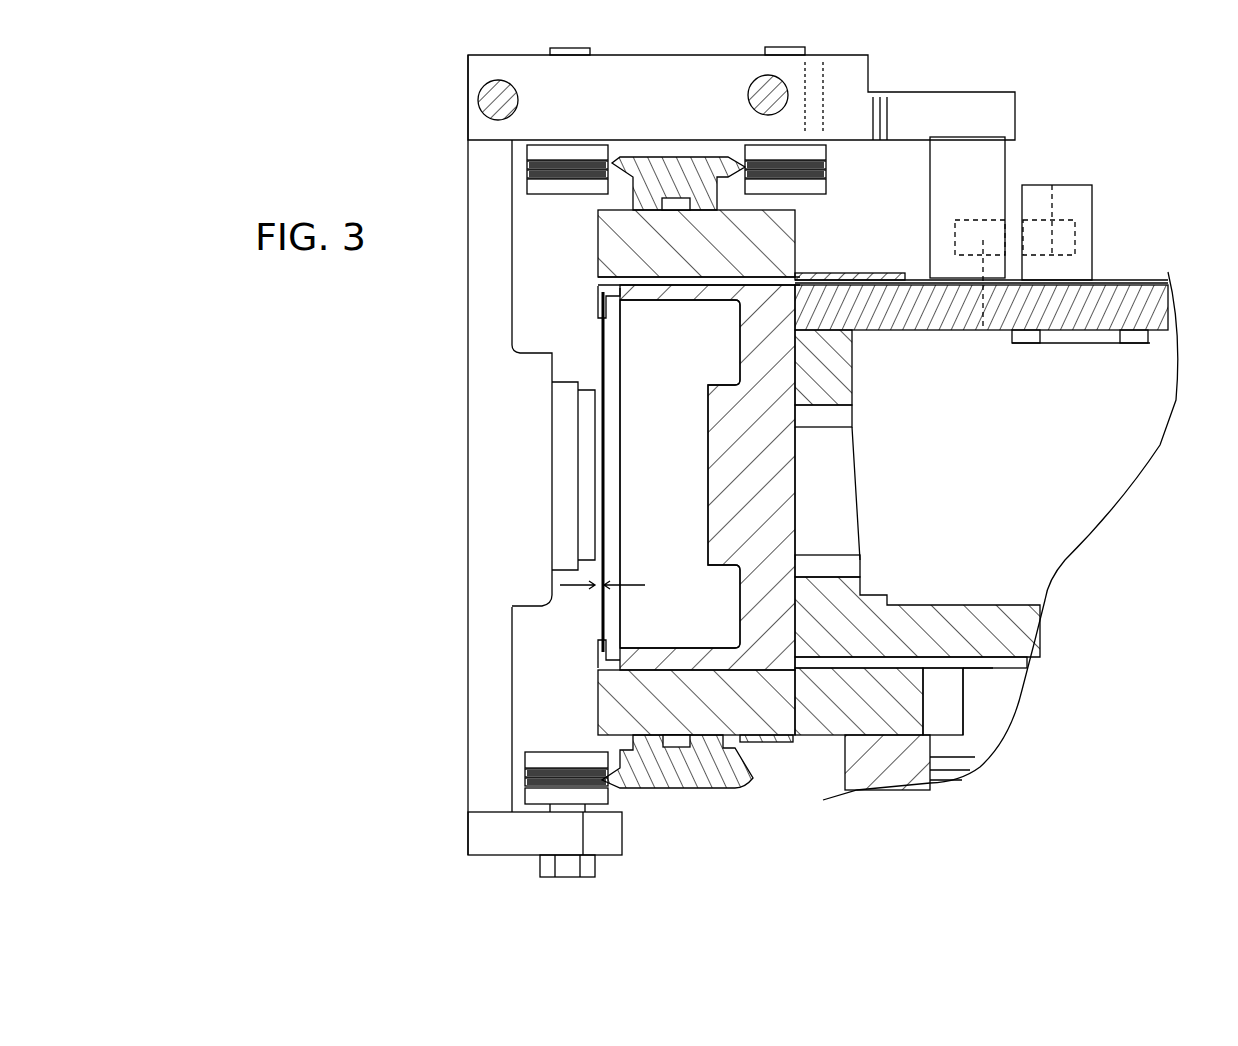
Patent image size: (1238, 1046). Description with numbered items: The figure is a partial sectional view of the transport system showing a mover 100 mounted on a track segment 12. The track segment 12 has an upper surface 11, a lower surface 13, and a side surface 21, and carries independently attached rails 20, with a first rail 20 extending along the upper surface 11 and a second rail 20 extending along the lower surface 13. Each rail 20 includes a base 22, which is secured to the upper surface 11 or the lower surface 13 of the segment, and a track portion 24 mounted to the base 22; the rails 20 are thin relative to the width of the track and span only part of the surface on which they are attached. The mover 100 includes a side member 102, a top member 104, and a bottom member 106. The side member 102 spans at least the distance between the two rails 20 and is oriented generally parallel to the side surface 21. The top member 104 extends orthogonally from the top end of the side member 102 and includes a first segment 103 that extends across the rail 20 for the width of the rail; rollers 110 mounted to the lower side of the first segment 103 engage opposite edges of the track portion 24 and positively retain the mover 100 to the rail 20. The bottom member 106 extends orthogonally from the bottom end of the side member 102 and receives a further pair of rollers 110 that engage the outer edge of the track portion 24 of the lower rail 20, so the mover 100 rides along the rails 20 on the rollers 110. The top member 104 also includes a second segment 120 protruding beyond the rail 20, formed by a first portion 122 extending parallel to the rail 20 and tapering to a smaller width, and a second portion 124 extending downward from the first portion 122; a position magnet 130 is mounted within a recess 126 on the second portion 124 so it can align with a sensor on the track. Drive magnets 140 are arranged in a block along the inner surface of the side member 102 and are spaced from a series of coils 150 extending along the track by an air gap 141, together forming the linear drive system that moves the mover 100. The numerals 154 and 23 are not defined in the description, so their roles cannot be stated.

The mover 100 is at (468, 97).
The side member 102 is at (482, 312).
The first segment 103 is at (716, 108).
The top member 104 is at (620, 72).
The bottom member 106 is at (605, 845).
The rollers 110 is at (568, 152).
The second segment 120 is at (978, 90).
The first portion 122 is at (910, 115).
The second portion 124 is at (978, 155).
The recess 126 is at (955, 240).
The position magnet 130 is at (985, 345).
The drive magnets 140 is at (587, 467).
The air gap 141 is at (630, 585).
The coils 150 is at (610, 438).
The mounting hole 154 is at (1052, 200).
The upper surface 11 is at (840, 277).
The straight track segment 12 is at (768, 476).
The lower surface 13 is at (995, 672).
The rail 20 is at (766, 255).
The side surface 21 is at (597, 298).
The base 22 is at (700, 258).
The cavity 23 is at (740, 340).
The track portion 24 is at (668, 172).